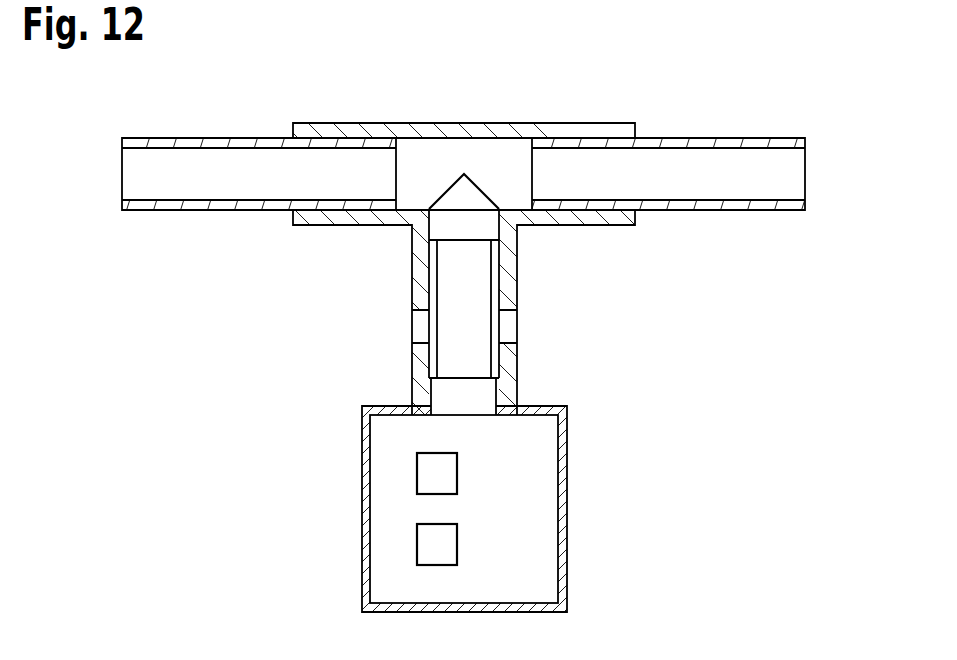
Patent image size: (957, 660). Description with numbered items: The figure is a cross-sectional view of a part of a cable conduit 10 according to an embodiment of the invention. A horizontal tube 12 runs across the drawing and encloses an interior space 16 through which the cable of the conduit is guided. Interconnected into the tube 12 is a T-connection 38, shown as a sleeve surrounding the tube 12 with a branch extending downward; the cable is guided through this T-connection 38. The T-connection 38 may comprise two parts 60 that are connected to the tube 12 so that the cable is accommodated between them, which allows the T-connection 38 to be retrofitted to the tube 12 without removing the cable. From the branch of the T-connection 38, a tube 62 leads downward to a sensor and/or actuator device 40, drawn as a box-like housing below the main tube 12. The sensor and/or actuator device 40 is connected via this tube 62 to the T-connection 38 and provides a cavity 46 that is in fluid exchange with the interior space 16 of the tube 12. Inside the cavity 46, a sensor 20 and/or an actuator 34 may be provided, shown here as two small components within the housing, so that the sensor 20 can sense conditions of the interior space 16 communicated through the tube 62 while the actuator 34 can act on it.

The cable conduit 10 is at (826, 92).
The tube 12 is at (767, 143).
The interior space 16 is at (710, 162).
The parts 60 is at (421, 130).
The T-connection 38 is at (474, 213).
The tube 62 is at (429, 323).
The sensor and/or actuator device 40 is at (563, 465).
The cavity 46 is at (535, 498).
The sensor 20 is at (417, 475).
The actuator 34 is at (417, 545).